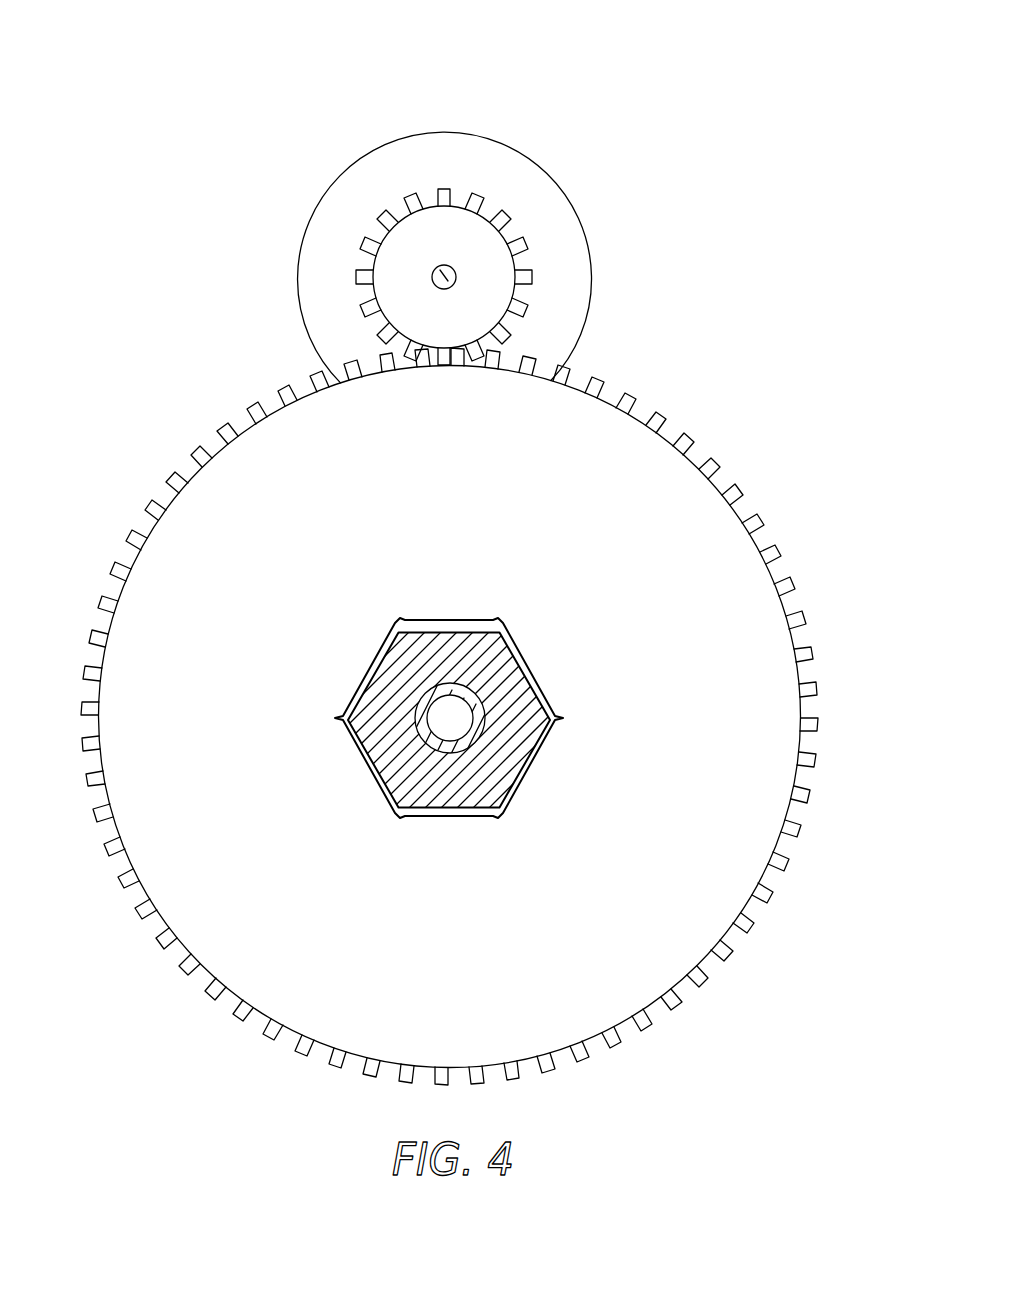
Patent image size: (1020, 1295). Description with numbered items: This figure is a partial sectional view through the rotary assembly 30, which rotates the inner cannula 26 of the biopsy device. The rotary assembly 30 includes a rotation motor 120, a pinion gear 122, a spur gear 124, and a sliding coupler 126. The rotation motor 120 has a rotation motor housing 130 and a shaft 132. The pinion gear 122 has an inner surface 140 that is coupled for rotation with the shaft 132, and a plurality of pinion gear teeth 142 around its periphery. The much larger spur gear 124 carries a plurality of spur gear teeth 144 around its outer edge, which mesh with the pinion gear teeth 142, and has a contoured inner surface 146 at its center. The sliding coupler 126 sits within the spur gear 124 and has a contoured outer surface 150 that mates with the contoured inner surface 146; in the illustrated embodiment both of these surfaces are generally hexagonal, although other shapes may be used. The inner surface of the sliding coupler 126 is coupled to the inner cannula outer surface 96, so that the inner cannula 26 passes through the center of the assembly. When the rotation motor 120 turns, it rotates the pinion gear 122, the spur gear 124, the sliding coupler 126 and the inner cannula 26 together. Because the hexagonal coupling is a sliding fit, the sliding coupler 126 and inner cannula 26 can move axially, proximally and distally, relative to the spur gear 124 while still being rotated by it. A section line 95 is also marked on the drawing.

The rotary assembly 30 is at (548, 72).
The rotation motor 120 is at (543, 153).
The pinion gear 122 is at (490, 247).
The spur gear 124 is at (728, 592).
The sliding coupler 126 is at (412, 795).
The rotation motor housing 130 is at (372, 174).
The shaft 132 is at (441, 272).
The inner surface 140 is at (434, 282).
The pinion gear teeth 142 is at (442, 197).
The spur gear teeth 144 is at (170, 478).
The contoured inner surface 146 is at (526, 663).
The contoured outer surface 150 is at (452, 628).
The shaft 95 is at (450, 718).
The inner cannula outer surface 96 is at (455, 752).
The inner cannula 26 is at (465, 745).